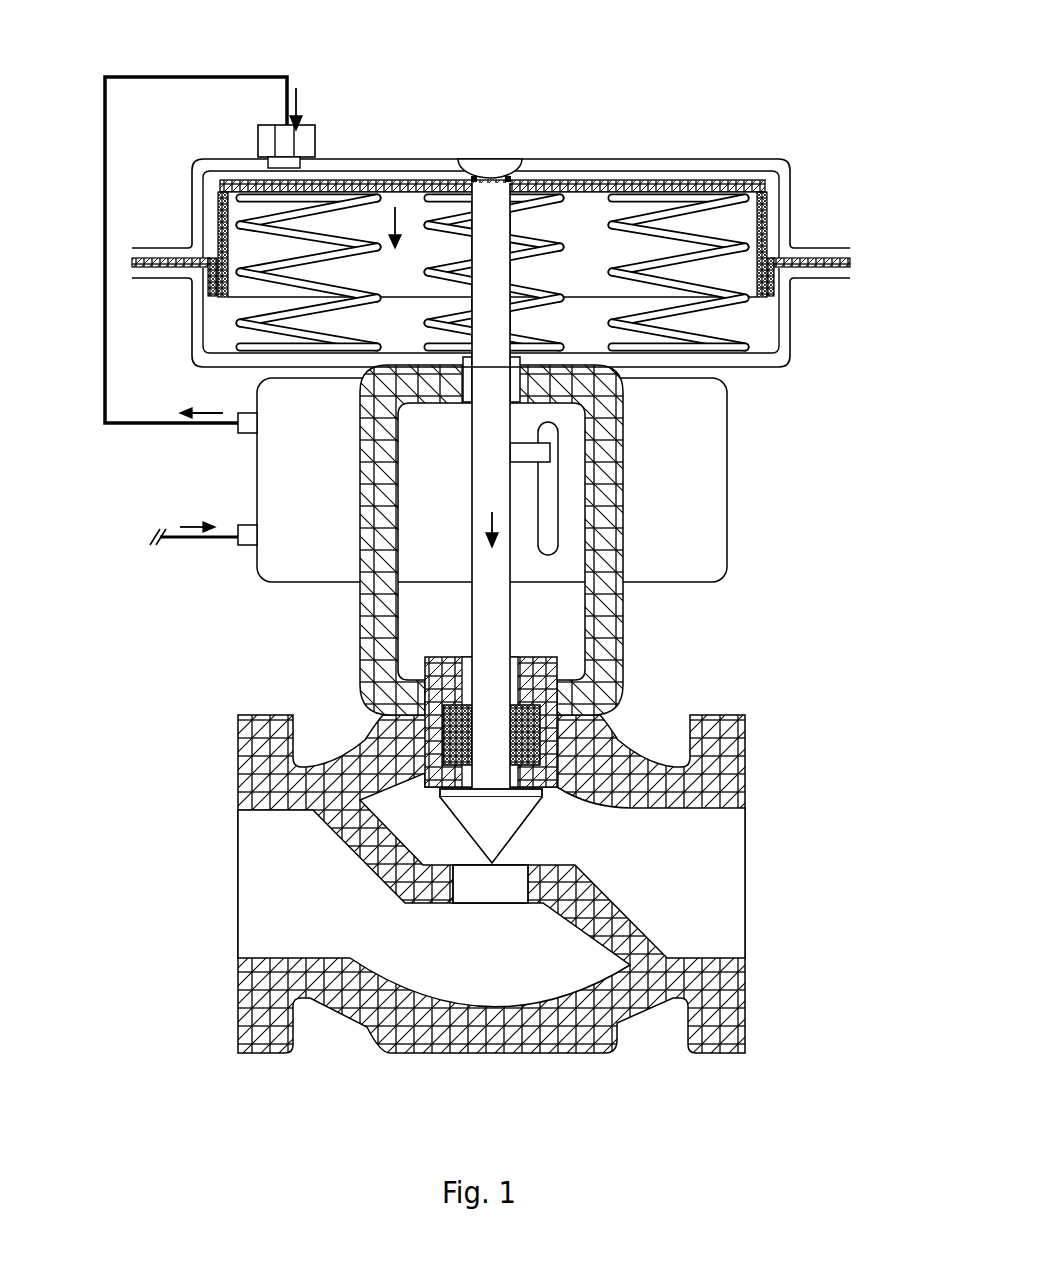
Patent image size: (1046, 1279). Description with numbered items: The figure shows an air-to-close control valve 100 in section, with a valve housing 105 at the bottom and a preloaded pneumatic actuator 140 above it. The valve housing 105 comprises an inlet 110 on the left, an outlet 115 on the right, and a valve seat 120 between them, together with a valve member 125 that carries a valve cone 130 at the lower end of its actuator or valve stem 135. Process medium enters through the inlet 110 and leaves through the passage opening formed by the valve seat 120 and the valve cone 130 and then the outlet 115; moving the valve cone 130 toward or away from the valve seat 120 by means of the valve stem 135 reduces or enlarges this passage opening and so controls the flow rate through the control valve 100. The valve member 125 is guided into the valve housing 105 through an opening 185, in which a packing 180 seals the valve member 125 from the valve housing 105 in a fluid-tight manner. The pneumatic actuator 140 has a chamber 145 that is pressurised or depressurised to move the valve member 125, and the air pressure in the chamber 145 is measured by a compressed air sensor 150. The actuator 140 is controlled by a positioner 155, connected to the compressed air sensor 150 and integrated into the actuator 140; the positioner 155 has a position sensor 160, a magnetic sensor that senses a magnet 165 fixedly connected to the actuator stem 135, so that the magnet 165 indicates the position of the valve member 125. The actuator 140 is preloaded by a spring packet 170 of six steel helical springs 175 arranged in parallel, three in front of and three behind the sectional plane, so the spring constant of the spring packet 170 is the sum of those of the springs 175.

The control valve 100 is at (658, 56).
The valve housing 105 is at (462, 881).
The inlet 110 is at (247, 873).
The outlet 115 is at (710, 865).
The valve seat 120 is at (538, 885).
The valve member 125 is at (483, 585).
The valve cone 130 is at (473, 823).
The valve stem 135 is at (490, 363).
The pneumatic actuator 140 is at (410, 165).
The chamber 145 is at (557, 175).
The compressed air sensor 150 is at (257, 137).
The positioner 155 is at (478, 329).
The position sensor 160 is at (548, 507).
The magnet 165 is at (527, 452).
The spring packet 170 is at (647, 187).
The helical springs 175 is at (677, 337).
The packing 180 is at (443, 737).
The opening 185 is at (427, 673).